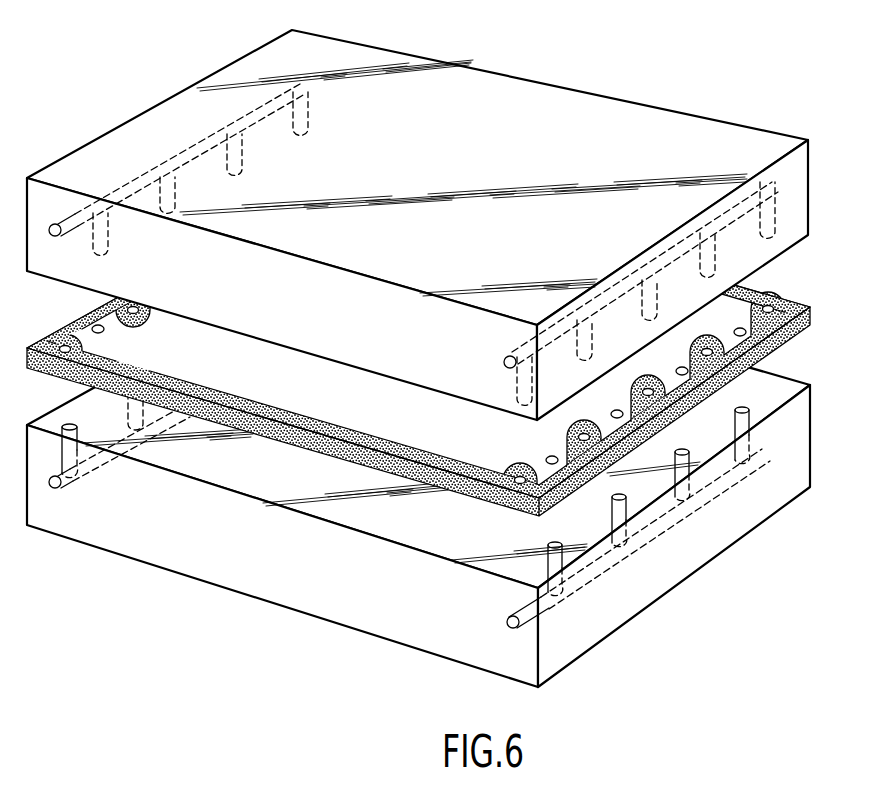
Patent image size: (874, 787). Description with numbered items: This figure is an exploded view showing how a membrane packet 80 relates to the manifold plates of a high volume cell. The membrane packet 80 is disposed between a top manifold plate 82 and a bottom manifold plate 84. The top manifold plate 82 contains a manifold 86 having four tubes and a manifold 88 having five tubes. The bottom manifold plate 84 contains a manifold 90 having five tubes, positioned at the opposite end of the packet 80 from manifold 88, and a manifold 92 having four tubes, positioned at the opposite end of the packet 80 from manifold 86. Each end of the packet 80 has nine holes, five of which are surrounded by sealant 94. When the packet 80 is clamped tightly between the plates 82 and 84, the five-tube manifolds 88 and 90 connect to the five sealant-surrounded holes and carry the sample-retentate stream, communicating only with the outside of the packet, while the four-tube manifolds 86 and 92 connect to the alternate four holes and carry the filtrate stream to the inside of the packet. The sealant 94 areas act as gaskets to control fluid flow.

The membrane packet 80 is at (338, 406).
The top manifold plate 82 is at (562, 95).
The bottom manifold plate 84 is at (292, 598).
The manifold 86 is at (188, 146).
The manifold 88 is at (673, 248).
The manifold 90 is at (92, 467).
The manifold 92 is at (645, 533).
The sealant 94 is at (793, 297).